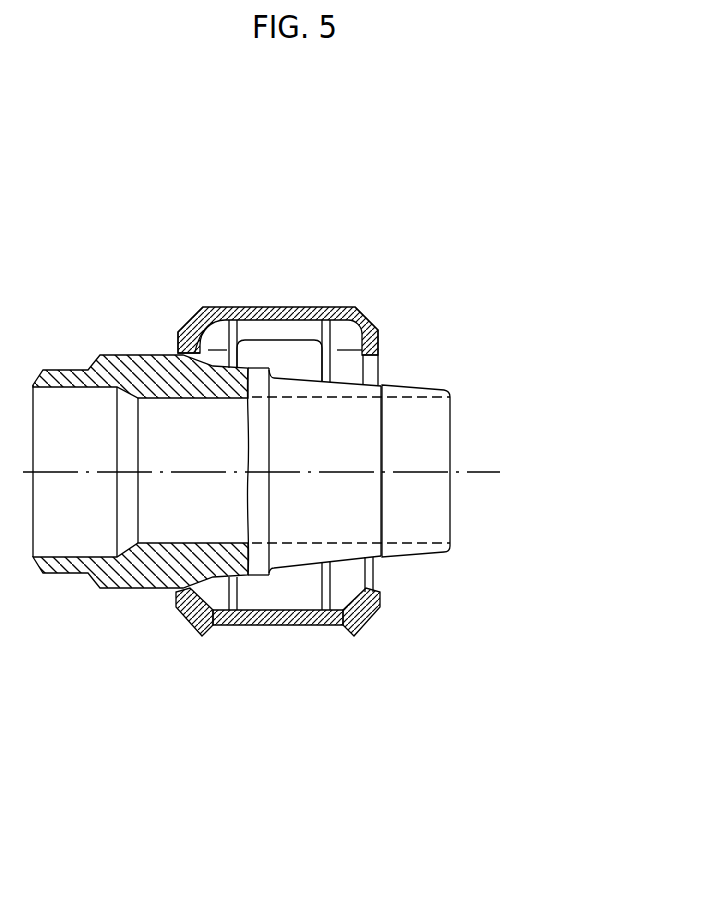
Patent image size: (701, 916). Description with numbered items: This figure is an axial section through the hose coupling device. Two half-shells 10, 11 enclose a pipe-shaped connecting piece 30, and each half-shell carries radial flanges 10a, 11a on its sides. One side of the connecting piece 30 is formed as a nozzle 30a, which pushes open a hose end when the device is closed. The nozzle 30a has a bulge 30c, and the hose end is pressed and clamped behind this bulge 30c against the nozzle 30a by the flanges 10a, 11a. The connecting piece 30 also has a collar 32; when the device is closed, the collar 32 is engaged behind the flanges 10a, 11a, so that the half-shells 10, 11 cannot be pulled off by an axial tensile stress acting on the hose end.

The half-shell 10 is at (330, 307).
The radial flange 10a is at (180, 332).
The half-shell 11 is at (291, 628).
The radial flange 11a is at (380, 602).
The pipe-shaped connecting piece 30 is at (352, 453).
The nozzle 30a is at (433, 497).
The bulge 30c is at (384, 563).
The collar 32 is at (215, 316).